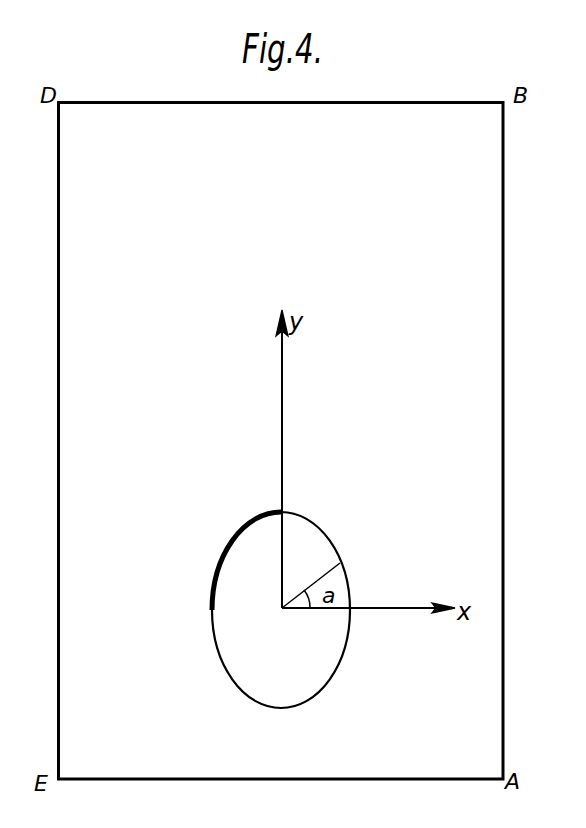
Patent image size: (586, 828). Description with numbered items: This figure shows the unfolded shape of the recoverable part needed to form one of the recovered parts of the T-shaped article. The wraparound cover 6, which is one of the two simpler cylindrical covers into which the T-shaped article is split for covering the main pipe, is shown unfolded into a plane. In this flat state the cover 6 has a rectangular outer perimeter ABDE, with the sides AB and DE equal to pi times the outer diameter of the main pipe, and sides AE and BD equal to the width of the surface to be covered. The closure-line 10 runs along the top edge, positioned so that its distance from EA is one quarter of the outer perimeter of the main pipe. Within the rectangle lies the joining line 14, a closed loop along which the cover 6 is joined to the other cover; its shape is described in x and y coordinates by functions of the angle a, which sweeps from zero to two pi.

The wraparound cover 6 is at (463, 407).
The closure-line 10 is at (190, 101).
The joining line 14 is at (335, 672).